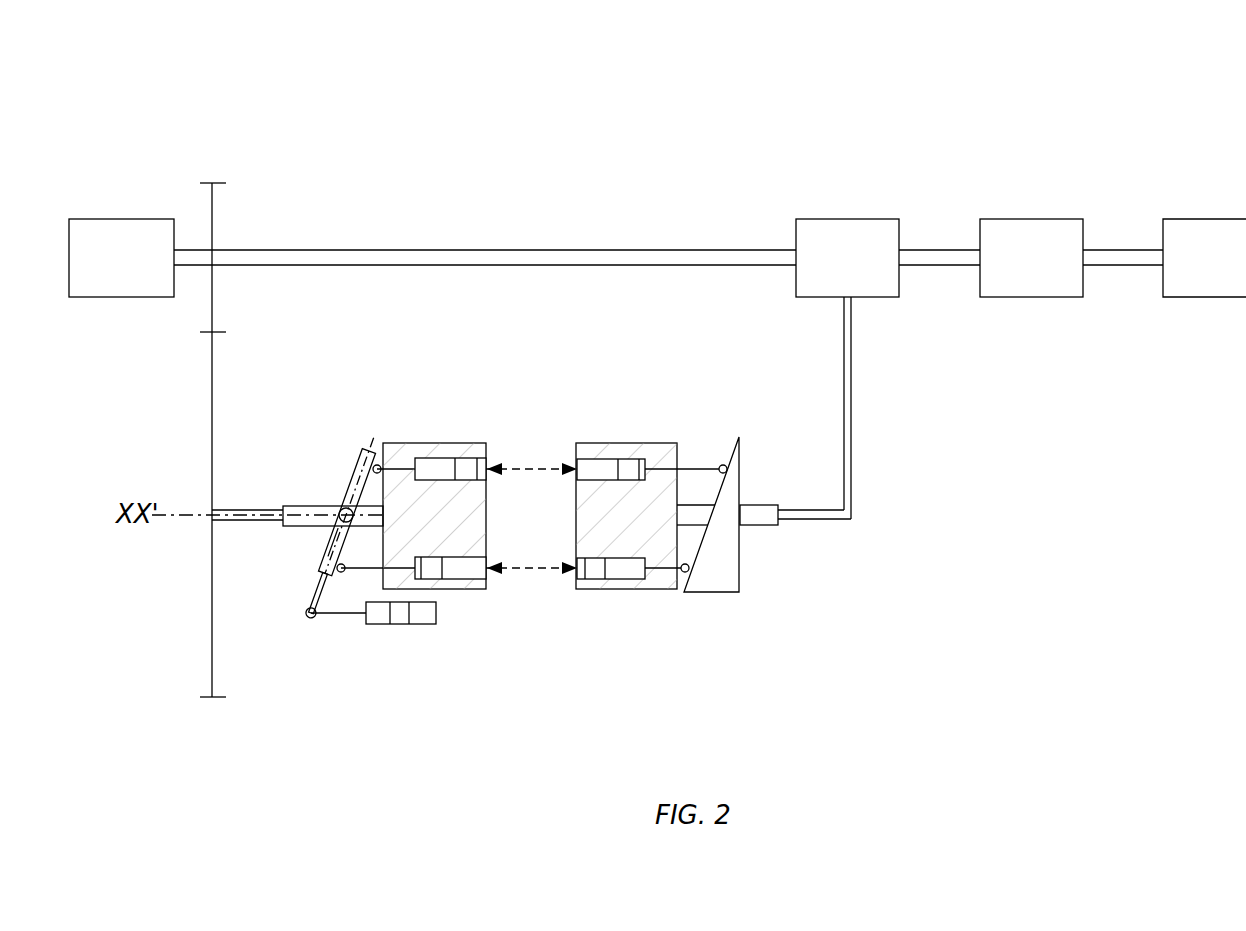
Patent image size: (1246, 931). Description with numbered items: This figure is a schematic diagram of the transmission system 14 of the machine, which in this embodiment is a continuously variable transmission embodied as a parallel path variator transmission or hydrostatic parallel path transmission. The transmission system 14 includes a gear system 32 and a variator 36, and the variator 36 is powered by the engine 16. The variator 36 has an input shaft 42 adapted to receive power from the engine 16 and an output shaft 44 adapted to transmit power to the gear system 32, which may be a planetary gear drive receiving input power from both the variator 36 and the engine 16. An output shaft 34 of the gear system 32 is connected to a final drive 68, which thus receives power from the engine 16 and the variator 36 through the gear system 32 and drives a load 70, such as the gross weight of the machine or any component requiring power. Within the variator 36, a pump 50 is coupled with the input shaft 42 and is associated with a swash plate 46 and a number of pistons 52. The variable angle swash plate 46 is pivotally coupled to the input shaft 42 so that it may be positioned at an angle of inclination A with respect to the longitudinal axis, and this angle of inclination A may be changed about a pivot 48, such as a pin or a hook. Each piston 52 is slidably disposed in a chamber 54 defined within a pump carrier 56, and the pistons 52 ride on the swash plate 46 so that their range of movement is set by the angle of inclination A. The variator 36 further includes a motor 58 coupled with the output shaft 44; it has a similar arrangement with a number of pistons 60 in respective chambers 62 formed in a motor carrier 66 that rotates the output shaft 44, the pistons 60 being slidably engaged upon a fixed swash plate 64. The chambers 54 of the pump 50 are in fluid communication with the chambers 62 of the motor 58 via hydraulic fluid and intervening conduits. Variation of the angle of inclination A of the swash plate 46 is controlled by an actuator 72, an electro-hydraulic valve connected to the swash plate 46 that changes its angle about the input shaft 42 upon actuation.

The transmission system 14 is at (1030, 97).
The engine 16 is at (138, 272).
The gear system 32 is at (865, 272).
The output shaft 34 is at (950, 248).
The variator 36 is at (678, 347).
The input shaft 42 is at (318, 505).
The output shaft 44 is at (766, 526).
The swash plate 46 is at (336, 490).
The pivot 48 is at (333, 532).
The pump 50 is at (458, 524).
The pistons 52 is at (467, 457).
The chambers 54 is at (503, 466).
The pump carrier 56 is at (453, 553).
The motor 58 is at (626, 502).
The pistons 60 is at (611, 516).
The chambers 62 is at (562, 470).
The fixed swash plate 64 is at (713, 585).
The motor carrier 66 is at (644, 553).
The final drive 68 is at (1048, 272).
The load 70 is at (1232, 272).
The actuator 72 is at (434, 628).
The angle of inclination A is at (325, 498).